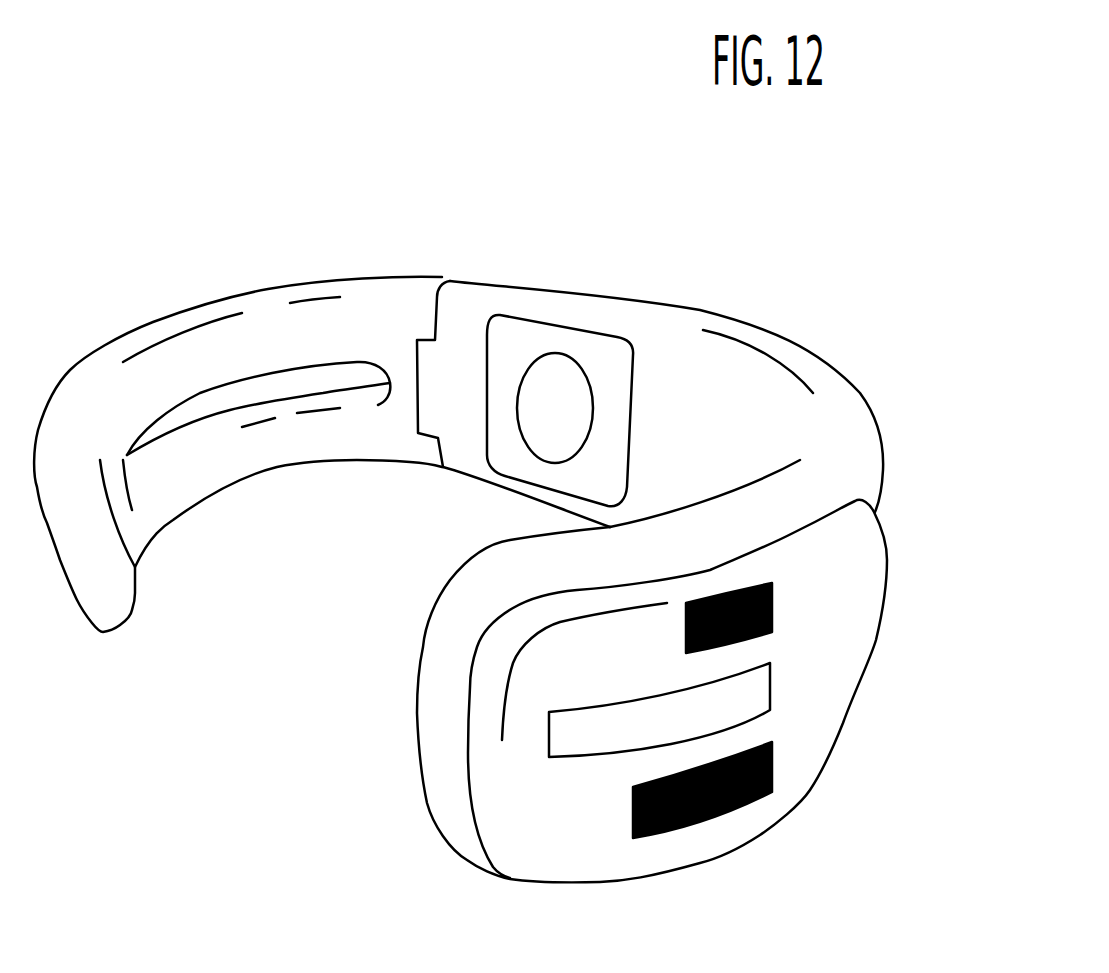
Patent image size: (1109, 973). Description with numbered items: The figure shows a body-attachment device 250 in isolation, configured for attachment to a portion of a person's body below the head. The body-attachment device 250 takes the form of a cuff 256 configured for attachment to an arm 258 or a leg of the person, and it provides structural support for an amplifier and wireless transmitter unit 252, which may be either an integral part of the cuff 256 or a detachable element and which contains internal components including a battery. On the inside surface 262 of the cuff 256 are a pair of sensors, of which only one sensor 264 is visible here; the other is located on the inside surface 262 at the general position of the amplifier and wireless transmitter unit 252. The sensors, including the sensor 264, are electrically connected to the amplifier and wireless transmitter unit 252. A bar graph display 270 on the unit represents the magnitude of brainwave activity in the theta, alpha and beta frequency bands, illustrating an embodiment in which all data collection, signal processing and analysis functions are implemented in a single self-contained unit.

The body-attachment device 250 is at (290, 669).
The amplifier and wireless transmitter unit 252 is at (710, 845).
The cuff 256 is at (817, 340).
The arm 258 is at (268, 455).
The inside surface 262 is at (688, 360).
The sensor 264 is at (563, 370).
The bar graph display 270 is at (556, 830).